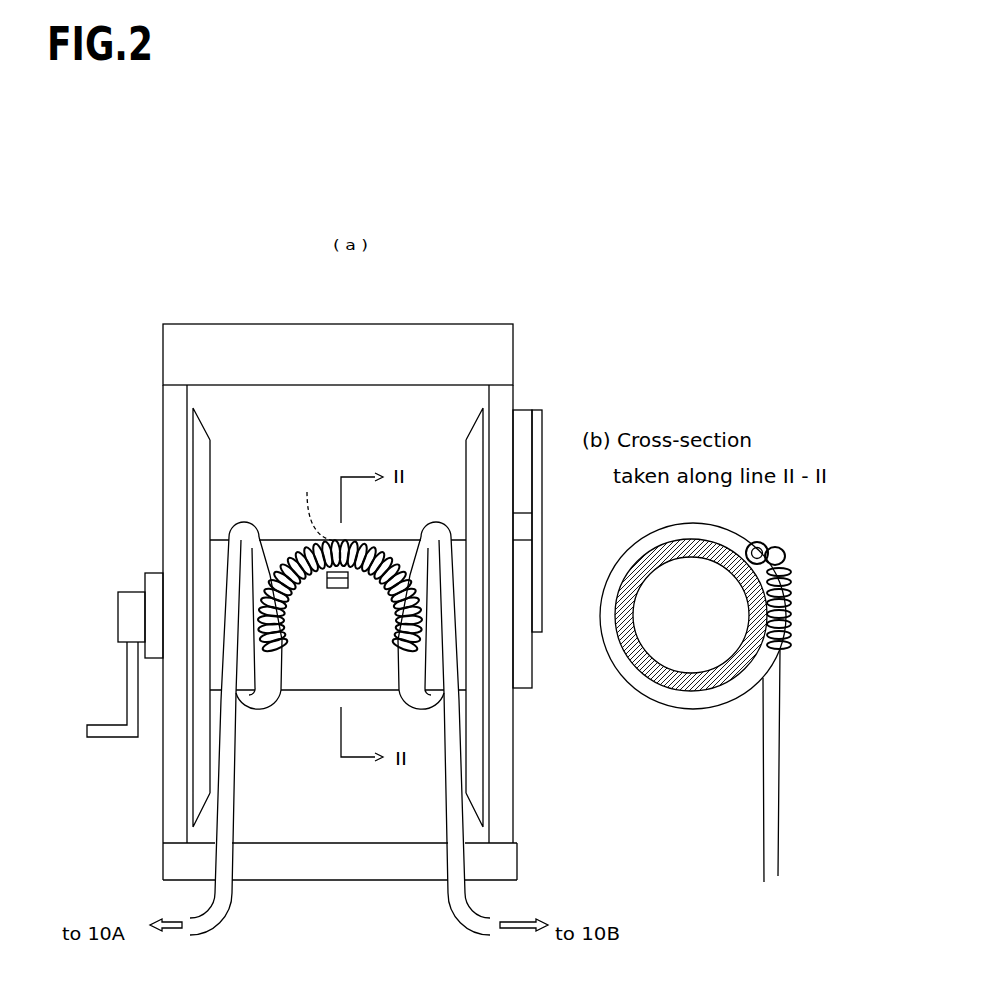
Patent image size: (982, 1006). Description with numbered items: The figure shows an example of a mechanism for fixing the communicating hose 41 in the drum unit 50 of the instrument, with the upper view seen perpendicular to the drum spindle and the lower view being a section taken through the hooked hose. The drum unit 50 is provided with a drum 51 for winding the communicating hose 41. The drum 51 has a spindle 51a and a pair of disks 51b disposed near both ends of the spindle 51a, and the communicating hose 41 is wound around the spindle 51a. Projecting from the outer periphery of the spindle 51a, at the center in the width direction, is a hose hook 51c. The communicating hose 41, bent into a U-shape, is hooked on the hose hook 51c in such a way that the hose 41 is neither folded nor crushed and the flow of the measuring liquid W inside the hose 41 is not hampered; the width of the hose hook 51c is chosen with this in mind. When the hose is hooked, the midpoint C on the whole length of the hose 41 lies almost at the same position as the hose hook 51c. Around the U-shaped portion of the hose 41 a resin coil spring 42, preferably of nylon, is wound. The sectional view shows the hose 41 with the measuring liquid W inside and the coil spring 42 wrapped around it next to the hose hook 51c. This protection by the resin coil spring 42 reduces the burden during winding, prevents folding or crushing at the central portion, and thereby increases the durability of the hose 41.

The drum unit 50 is at (219, 320).
The communicating hose 41 is at (222, 823).
The resin coil spring 42 is at (287, 563).
The drum 51 is at (386, 536).
The spindle 51a is at (292, 667).
The disks 51b is at (205, 470).
The hose hook 51c is at (338, 590).
The midpoint C is at (320, 506).
The measuring liquid W is at (755, 542).